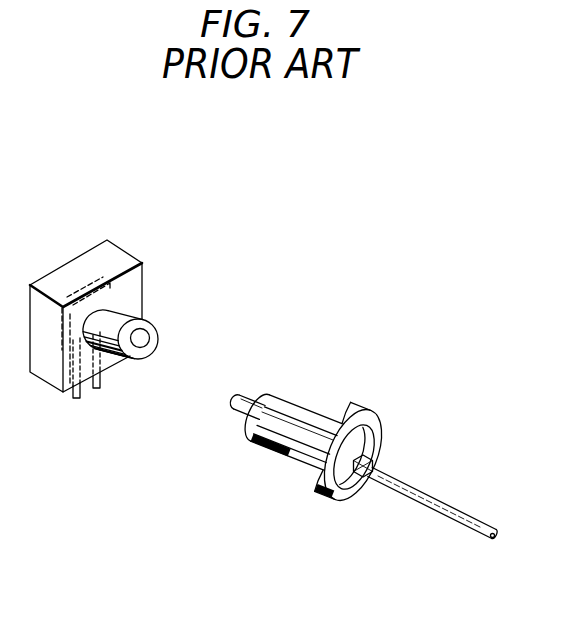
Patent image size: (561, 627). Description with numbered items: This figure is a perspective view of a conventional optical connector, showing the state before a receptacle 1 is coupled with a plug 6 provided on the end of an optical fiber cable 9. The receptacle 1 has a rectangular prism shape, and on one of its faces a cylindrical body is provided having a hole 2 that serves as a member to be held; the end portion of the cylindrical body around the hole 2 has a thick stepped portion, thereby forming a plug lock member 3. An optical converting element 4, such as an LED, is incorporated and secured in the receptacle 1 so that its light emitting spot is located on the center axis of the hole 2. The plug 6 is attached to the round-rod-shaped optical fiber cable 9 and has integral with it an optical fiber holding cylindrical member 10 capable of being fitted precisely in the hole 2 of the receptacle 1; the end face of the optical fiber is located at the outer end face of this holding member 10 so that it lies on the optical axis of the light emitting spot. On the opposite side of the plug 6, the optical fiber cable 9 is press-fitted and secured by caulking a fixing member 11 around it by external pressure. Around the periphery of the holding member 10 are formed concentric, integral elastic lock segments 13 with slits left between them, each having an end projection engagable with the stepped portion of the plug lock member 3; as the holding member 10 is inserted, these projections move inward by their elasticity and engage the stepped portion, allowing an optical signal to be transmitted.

The receptacle 1 is at (108, 236).
The hole 2 is at (140, 341).
The plug lock member 3 is at (119, 307).
The optical converting element 4 is at (62, 340).
The plug 6 is at (353, 408).
The optical fiber cable 9 is at (446, 498).
The optical fiber holding cylindrical member 10 is at (254, 382).
The fixing member 11 is at (360, 483).
The elastic lock segments 13 is at (287, 402).